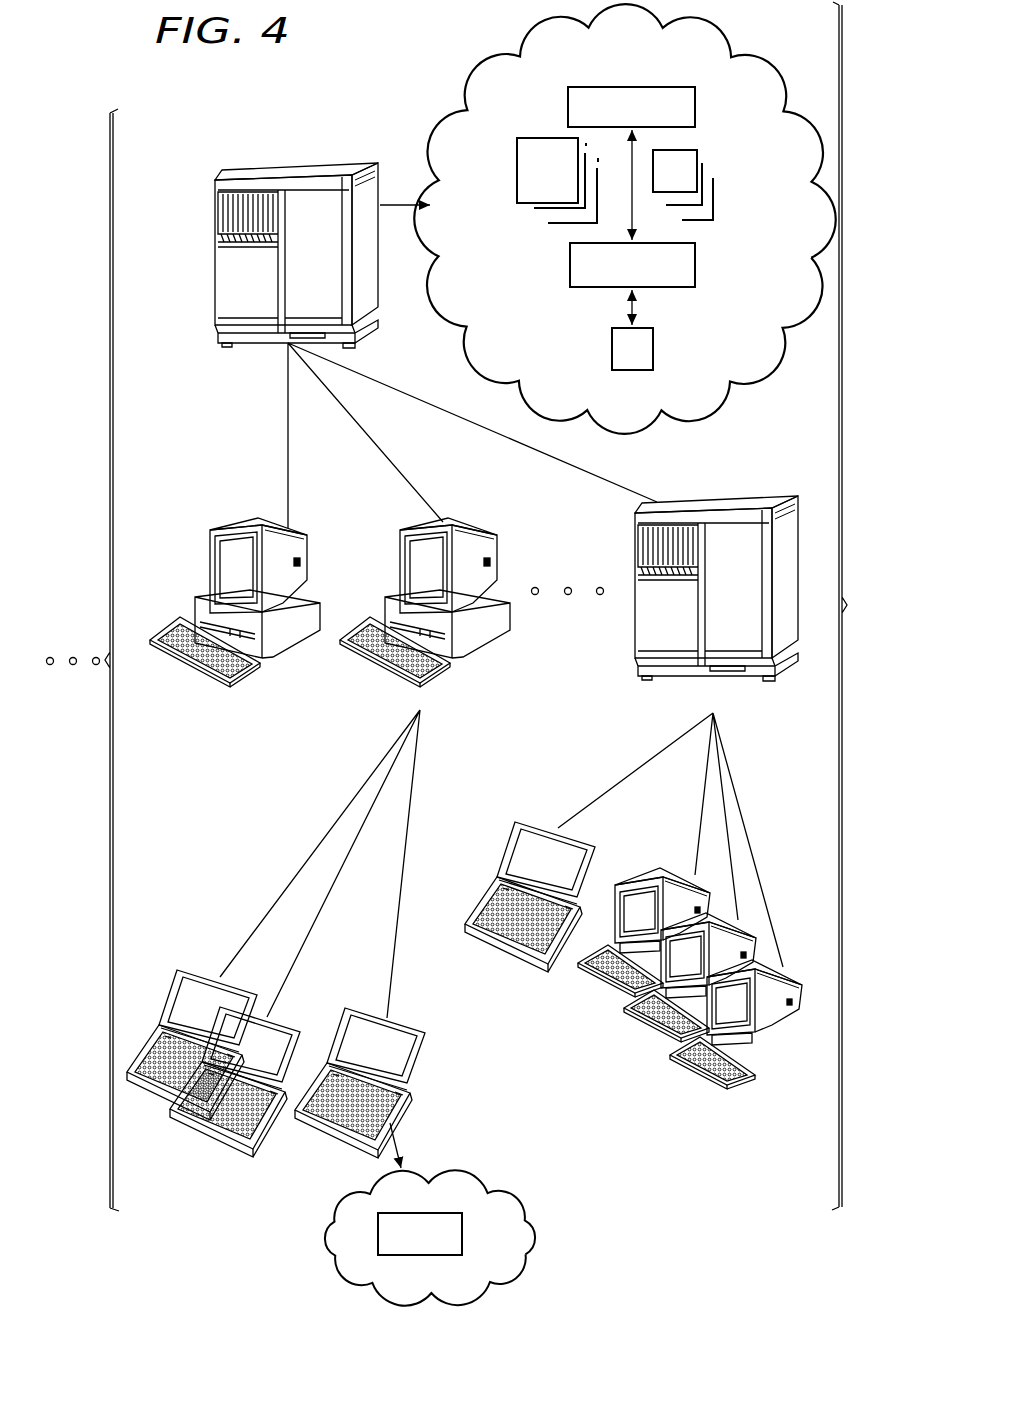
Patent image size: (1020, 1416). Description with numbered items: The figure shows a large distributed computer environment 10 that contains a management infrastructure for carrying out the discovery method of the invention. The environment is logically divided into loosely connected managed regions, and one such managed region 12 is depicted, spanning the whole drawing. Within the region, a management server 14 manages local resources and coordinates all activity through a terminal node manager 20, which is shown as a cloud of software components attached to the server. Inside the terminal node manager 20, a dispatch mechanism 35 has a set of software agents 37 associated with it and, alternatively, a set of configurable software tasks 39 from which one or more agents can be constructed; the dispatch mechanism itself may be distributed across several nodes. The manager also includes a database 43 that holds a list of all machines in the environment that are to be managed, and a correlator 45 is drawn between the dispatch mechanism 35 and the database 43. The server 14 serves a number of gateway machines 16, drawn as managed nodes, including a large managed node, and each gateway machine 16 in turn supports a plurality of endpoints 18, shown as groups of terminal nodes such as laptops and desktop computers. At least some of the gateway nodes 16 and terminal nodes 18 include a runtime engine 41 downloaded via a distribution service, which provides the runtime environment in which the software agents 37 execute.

The distributed computer environment 10 is at (213, 874).
The managed region 12 is at (862, 314).
The management server 14 is at (213, 284).
The gateway machine 16 is at (209, 556).
The endpoints 18 is at (445, 968).
The terminal node manager 20 is at (174, 166).
The dispatch mechanism 35 is at (698, 108).
The software agents 37 is at (508, 128).
The configurable software tasks 39 is at (735, 140).
The runtime engine 41 is at (463, 1236).
The database 43 is at (655, 350).
The correlator 45 is at (606, 289).